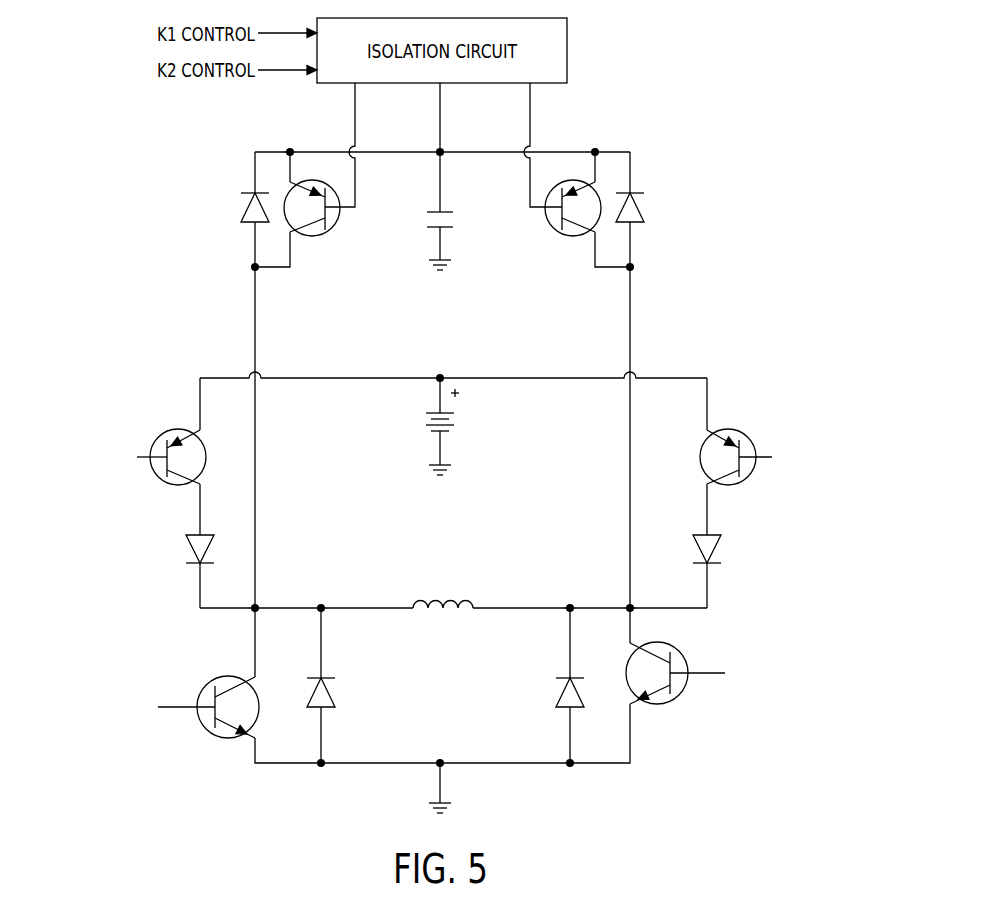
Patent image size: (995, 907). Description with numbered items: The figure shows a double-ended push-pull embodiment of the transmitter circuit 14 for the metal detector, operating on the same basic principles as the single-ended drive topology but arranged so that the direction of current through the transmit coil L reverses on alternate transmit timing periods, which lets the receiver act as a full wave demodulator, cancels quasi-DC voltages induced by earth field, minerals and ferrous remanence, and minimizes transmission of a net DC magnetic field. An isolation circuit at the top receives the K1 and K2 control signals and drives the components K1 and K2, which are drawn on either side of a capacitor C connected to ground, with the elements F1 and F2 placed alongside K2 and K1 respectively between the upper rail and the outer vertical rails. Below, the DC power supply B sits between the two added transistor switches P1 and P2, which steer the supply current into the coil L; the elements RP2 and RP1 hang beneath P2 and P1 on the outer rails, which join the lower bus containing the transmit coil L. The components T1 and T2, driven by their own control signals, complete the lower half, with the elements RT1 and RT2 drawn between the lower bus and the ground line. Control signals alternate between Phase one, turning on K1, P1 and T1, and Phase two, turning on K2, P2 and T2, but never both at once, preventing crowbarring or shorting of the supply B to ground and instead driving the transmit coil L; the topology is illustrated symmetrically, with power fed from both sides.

The transmitter circuit 14 is at (706, 71).
The fuse / diode F1 is at (243, 209).
The fuse / diode F2 is at (642, 209).
The K1 switch component K1 is at (577, 175).
The K2 switch component K2 is at (309, 175).
The capacitor C is at (451, 176).
The DC power supply B is at (451, 426).
The transistor switch P1 is at (786, 456).
The transistor switch P2 is at (121, 456).
The diode RP1 is at (726, 571).
The diode RP2 is at (184, 571).
The transmit coil L is at (443, 590).
The T1 switch component T1 is at (188, 685).
The T2 switch component T2 is at (699, 685).
The diode RT1 is at (339, 685).
The diode RT2 is at (551, 685).